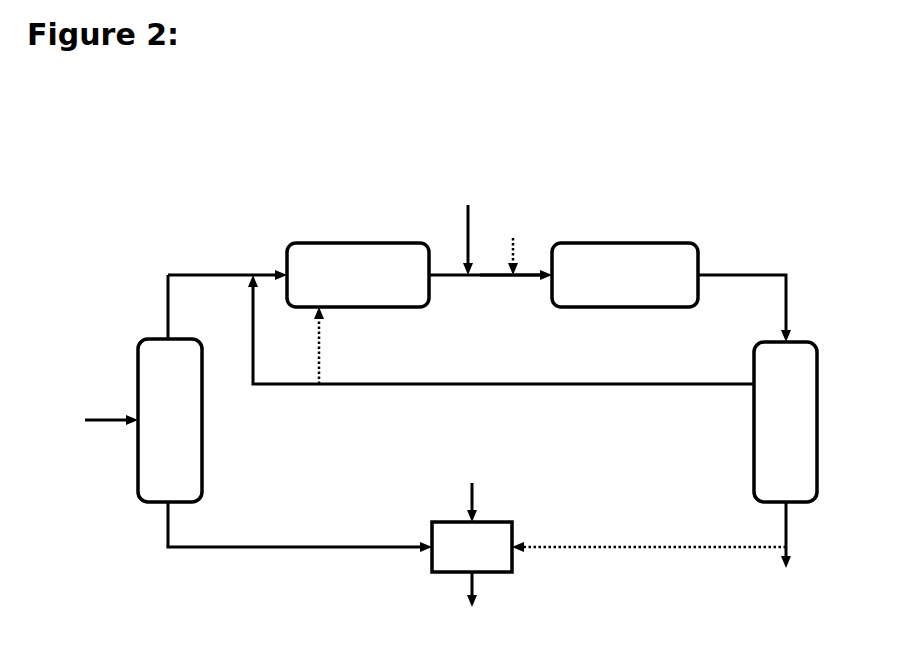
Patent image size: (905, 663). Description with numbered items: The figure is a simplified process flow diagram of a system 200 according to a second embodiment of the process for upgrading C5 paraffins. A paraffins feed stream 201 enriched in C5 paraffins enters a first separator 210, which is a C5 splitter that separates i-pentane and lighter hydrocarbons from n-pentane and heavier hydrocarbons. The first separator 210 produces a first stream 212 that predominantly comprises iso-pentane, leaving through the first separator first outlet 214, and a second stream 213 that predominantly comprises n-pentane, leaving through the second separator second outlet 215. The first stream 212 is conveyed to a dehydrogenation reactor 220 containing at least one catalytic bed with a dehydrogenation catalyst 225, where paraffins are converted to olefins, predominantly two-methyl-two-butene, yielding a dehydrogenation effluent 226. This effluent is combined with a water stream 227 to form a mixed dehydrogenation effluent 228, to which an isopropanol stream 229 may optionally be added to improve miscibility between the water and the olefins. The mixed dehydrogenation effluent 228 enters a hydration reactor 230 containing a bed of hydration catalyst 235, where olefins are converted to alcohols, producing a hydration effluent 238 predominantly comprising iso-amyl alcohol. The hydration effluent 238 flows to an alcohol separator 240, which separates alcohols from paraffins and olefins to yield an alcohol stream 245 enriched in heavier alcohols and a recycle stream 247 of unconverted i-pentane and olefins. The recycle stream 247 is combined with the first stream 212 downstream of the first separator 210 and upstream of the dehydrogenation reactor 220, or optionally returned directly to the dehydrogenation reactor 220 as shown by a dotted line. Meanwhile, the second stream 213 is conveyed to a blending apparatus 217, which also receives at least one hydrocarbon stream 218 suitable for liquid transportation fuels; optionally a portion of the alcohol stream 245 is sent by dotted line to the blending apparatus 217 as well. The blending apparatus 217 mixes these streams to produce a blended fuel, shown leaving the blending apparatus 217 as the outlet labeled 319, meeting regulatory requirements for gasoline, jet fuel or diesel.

The system 200 is at (127, 178).
The paraffins feed stream 201 is at (90, 420).
The first separator 210 is at (138, 352).
The first stream 212 is at (180, 275).
The second stream 213 is at (240, 553).
The first separator first outlet 214 is at (176, 331).
The second separator second outlet 215 is at (176, 508).
The blending apparatus 217 is at (472, 547).
The hydrocarbon stream 218 is at (472, 490).
The dehydrogenation reactor 220 is at (378, 242).
The dehydrogenation catalyst 225 is at (365, 275).
The dehydrogenation effluent 226 is at (447, 280).
The water stream 227 is at (467, 228).
The mixed dehydrogenation effluent 228 is at (489, 280).
The isopropanol stream 229 is at (515, 244).
The hydration reactor 230 is at (625, 242).
The hydration catalyst 235 is at (611, 275).
The hydration effluent 238 is at (779, 268).
The alcohol separator 240 is at (754, 443).
The alcohol stream 245 is at (788, 550).
The recycle stream 247 is at (536, 382).
The product outlet stream 319 is at (472, 603).